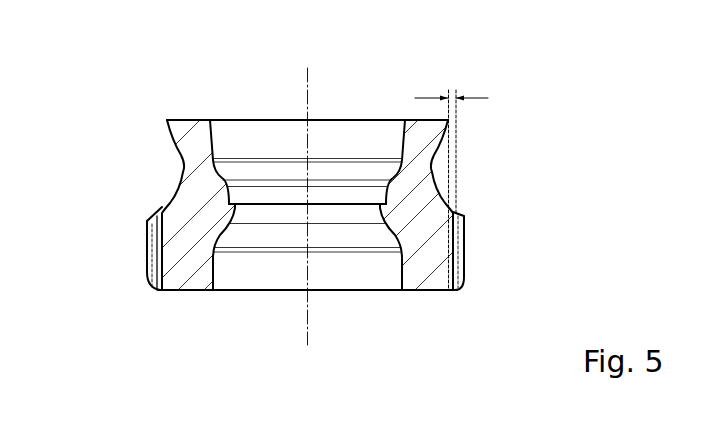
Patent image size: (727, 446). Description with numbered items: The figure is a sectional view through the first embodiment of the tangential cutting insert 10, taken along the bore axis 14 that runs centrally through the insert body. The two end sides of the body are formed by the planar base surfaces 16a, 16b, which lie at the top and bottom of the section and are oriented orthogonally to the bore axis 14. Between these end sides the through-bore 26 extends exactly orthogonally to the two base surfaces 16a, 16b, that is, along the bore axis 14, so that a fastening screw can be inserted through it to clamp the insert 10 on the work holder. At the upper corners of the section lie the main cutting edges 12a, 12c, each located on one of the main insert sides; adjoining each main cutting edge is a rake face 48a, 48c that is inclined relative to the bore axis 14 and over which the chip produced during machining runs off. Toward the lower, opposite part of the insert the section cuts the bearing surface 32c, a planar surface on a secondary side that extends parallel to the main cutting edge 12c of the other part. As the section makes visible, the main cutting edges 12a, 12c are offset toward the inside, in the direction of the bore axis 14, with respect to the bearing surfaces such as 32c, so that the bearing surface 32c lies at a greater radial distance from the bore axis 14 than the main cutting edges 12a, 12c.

The cutting insert 10 is at (612, 133).
The bore axis 14 is at (308, 88).
The main cutting edge 12a is at (167, 121).
The main cutting edge 12c is at (450, 121).
The rake face 48a is at (177, 161).
The rake face 48c is at (439, 162).
The base surface 16a is at (210, 117).
The base surface 16b is at (191, 297).
The through-bore 26 is at (349, 276).
The bearing surface 32c is at (459, 260).